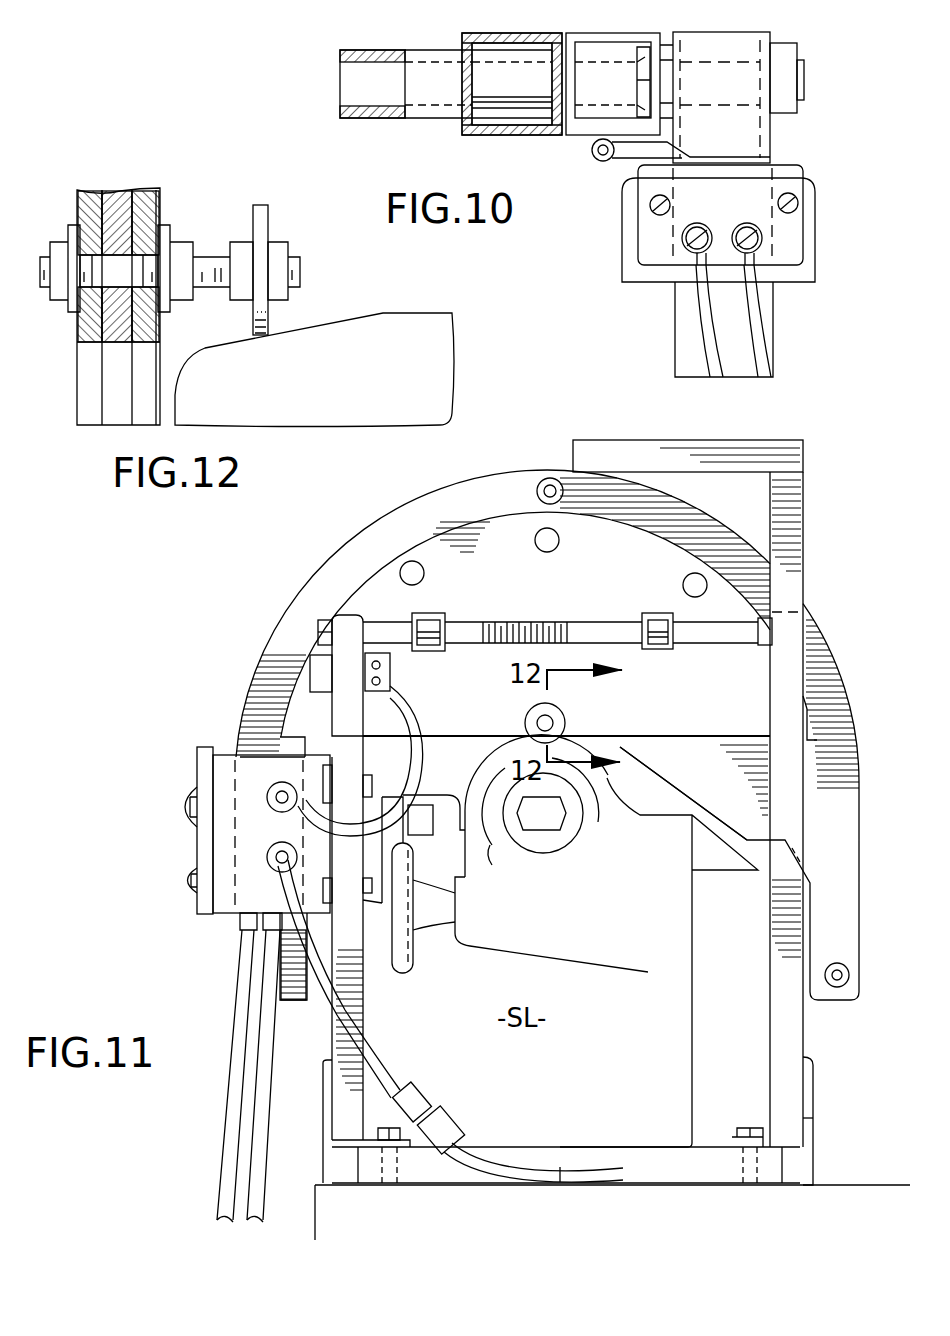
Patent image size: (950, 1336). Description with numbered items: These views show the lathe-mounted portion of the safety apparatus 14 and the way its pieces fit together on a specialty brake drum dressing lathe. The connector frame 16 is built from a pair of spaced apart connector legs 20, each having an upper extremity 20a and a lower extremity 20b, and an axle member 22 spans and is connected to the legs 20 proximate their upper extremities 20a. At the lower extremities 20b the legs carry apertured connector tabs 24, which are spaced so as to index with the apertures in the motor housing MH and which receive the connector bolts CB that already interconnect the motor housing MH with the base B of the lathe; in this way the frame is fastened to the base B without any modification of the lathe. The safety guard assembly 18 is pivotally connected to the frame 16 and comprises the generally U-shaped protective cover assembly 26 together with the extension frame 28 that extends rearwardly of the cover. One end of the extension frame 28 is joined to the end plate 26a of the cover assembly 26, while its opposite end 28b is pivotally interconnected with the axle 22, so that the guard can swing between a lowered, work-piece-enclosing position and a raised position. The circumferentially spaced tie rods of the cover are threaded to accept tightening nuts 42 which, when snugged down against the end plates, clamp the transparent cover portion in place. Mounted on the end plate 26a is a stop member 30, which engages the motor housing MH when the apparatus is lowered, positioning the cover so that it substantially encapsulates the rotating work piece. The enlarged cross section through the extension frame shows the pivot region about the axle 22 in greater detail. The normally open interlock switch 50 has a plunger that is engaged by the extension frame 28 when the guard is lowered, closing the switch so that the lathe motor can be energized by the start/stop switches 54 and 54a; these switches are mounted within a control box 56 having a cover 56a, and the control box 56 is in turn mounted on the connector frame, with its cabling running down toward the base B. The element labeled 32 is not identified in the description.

In FIG. 11, the safety apparatus 14 is at (213, 622).
In FIG. 11, the connector frame 16 is at (806, 808).
In FIG. 10, the safety guard assembly 18 is at (458, 131).
In FIG. 11, the safety guard assembly 18 is at (550, 618).
In FIG. 10, the connector legs 20 is at (690, 342).
In FIG. 11, the connector legs 20 is at (360, 980).
In FIG. 10, the upper extremity 20a is at (755, 143).
In FIG. 11, the upper extremity 20a is at (345, 622).
In FIG. 11, the lower extremity 20b is at (357, 1097).
In FIG. 10, the axle member 22 is at (366, 88).
In FIG. 11, the axle member 22 is at (428, 628).
In FIG. 11, the apertured connector tabs 24 is at (345, 1140).
In FIG. 12, the protective cover assembly 26 is at (105, 187).
In FIG. 11, the protective cover assembly 26 is at (256, 660).
In FIG. 12, the end plate 26a is at (160, 202).
In FIG. 11, the end plate 26a is at (390, 582).
In FIG. 11, the extension frame 28 is at (443, 613).
In FIG. 10, the opposite end of extension frame 28b is at (467, 35).
In FIG. 12, the stop member 30 is at (268, 218).
In FIG. 11, the stop member 30 is at (567, 718).
In FIG. 11, the frame bar 32 is at (803, 500).
In FIG. 11, the tightening nuts 42 is at (547, 487).
In FIG. 10, the interlock switch 50 is at (792, 232).
In FIG. 11, the interlock switch 50 is at (392, 677).
In FIG. 11, the start/stop switch 54 is at (175, 805).
In FIG. 11, the start/stop switch 54a is at (181, 881).
In FIG. 11, the control box 56 is at (198, 758).
In FIG. 10, the cover 56a is at (592, 152).
In FIG. 11, the cover 56a is at (198, 848).
In FIG. 12, the motor housing MH is at (357, 333).
In FIG. 11, the motor housing MH is at (650, 838).
In FIG. 11, the connector bolts CB is at (430, 1103).
In FIG. 11, the base B is at (728, 1188).